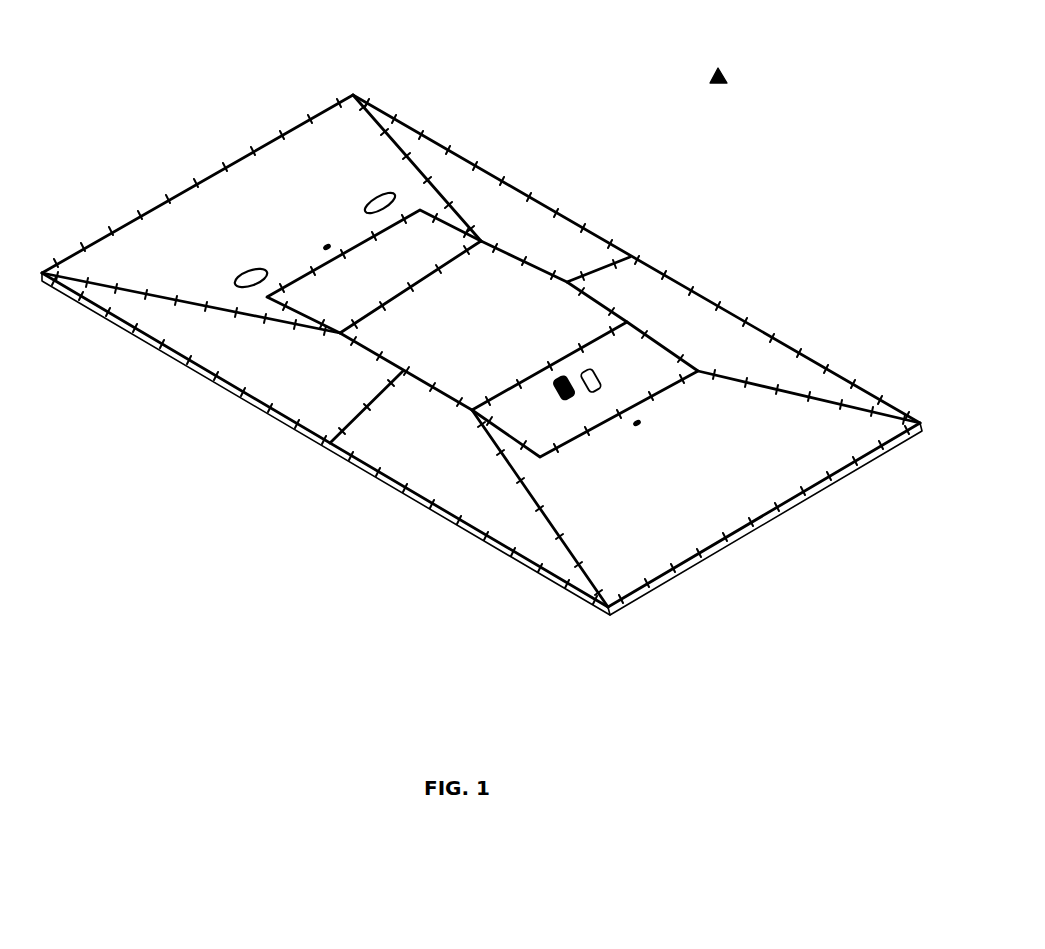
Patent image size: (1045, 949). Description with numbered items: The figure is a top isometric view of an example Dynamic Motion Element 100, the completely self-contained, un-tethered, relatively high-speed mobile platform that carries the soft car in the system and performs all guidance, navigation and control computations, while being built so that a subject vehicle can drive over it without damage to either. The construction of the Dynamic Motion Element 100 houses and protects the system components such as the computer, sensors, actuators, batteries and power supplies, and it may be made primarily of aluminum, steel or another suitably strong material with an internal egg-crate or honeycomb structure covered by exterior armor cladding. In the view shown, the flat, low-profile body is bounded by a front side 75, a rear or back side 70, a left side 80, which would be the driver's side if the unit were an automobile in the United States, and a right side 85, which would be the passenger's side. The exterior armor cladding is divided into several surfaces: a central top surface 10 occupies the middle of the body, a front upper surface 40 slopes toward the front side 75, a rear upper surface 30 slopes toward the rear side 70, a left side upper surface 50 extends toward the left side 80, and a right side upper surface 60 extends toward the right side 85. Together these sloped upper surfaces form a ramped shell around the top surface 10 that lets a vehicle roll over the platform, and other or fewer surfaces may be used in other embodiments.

The Dynamic Motion Element 100 is at (724, 74).
The top surface 10 is at (500, 288).
The rear upper surface 30 is at (702, 455).
The front upper surface 40 is at (398, 260).
The left side upper surface 50 is at (413, 447).
The right side upper surface 60 is at (680, 310).
The rear side 70 is at (795, 505).
The front side 75 is at (219, 165).
The left side 80 is at (407, 500).
The right side 85 is at (497, 168).